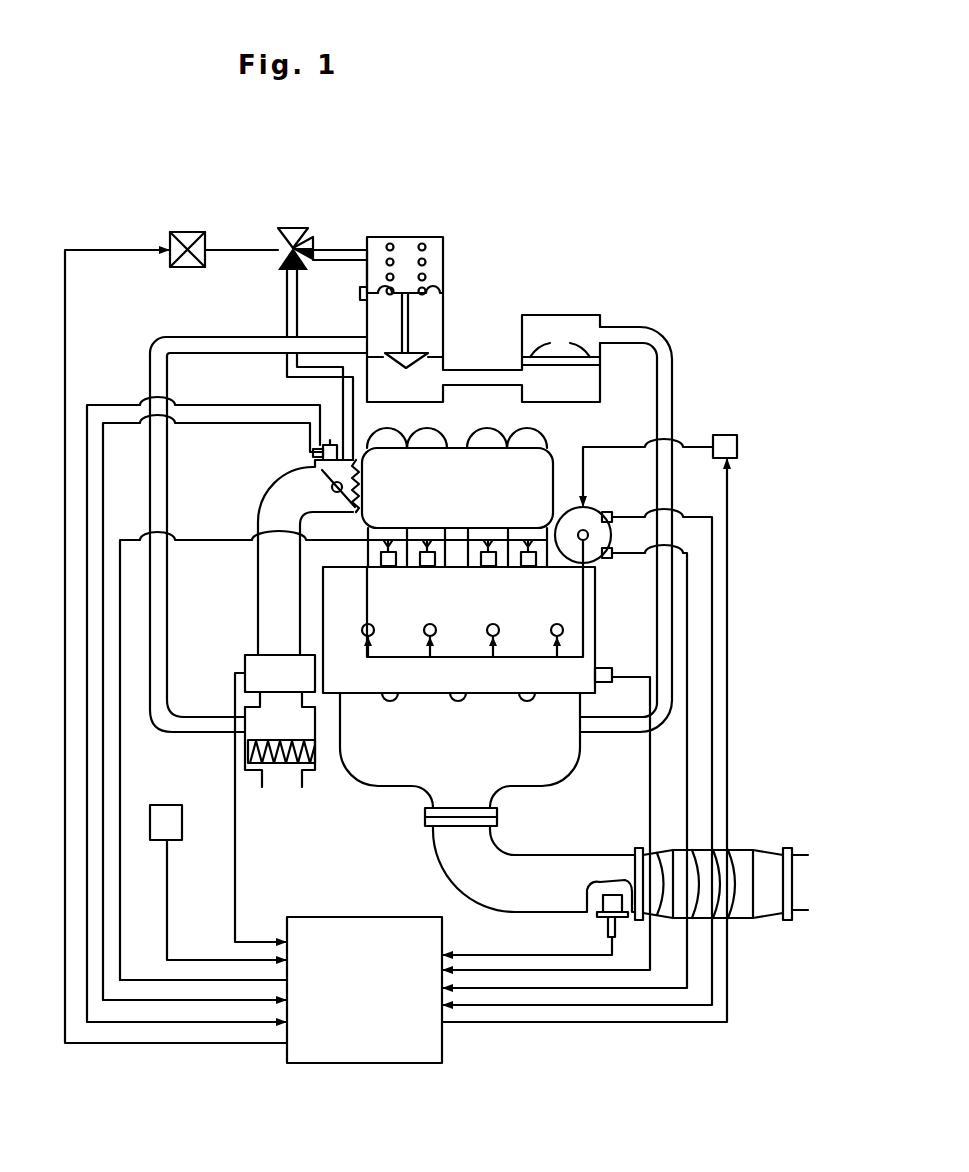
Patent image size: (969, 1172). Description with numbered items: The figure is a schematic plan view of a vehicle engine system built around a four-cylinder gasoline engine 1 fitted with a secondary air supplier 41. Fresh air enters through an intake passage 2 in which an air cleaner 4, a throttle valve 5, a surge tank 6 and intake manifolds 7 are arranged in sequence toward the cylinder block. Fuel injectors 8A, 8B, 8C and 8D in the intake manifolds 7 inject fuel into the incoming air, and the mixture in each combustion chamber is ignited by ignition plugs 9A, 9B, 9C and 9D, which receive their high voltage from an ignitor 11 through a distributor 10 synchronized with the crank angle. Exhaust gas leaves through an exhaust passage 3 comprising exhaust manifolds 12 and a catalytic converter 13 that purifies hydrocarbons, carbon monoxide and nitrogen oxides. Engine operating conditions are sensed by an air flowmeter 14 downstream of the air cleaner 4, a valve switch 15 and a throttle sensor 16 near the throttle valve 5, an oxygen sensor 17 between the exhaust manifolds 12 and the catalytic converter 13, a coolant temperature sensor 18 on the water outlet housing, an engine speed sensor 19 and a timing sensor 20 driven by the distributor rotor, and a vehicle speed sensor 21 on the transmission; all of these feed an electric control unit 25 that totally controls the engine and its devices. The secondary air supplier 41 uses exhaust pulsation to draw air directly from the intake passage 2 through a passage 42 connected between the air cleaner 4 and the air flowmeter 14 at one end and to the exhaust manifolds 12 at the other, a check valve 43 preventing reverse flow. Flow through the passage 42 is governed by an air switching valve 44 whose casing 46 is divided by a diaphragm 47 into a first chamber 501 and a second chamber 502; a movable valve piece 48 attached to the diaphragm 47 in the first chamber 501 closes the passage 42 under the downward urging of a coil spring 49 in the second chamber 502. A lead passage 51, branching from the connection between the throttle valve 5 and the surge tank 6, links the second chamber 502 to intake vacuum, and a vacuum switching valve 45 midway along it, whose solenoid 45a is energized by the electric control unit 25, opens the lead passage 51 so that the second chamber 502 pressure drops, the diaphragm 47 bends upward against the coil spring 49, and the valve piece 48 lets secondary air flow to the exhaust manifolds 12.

The gasoline engine 1 is at (603, 645).
The intake passage 2 is at (258, 592).
The exhaust passage 3 is at (591, 857).
The air cleaner 4 is at (316, 757).
The throttle valve 5 is at (320, 488).
The surge tank 6 is at (453, 464).
The intake manifolds 7 is at (367, 551).
The fuel injector 8A is at (389, 568).
The fuel injector 8B is at (428, 568).
The fuel injector 8C is at (489, 568).
The fuel injector 8D is at (529, 568).
The ignition plug 9A is at (362, 633).
The ignition plug 9B is at (424, 634).
The ignition plug 9C is at (487, 634).
The ignition plug 9D is at (551, 634).
The distributor 10 is at (570, 515).
The ignitor 11 is at (737, 447).
The exhaust manifolds 12 is at (557, 766).
The catalytic converter 13 is at (765, 855).
The air flowmeter 14 is at (248, 658).
The valve switch 15 is at (313, 455).
The throttle sensor 16 is at (337, 443).
The oxygen sensor 17 is at (603, 918).
The coolant temperature sensor 18 is at (605, 683).
The engine speed sensor 19 is at (612, 512).
The timing sensor 20 is at (612, 560).
The vehicle speed sensor 21 is at (204, 795).
The electric control unit 25 is at (362, 917).
The secondary air supplier 41 is at (680, 350).
The passage 42 is at (150, 374).
The check valve 43 is at (560, 315).
The air switching valve 44 is at (378, 236).
The vacuum switching valve 45 is at (314, 227).
The solenoid 45a is at (186, 267).
The casing 46 is at (433, 240).
The diaphragm 47 is at (409, 296).
The movable valve piece 48 is at (408, 333).
The coil spring 49 is at (426, 276).
The lead passage 51 is at (292, 320).
The first chamber 501 is at (368, 312).
The second chamber 502 is at (437, 249).